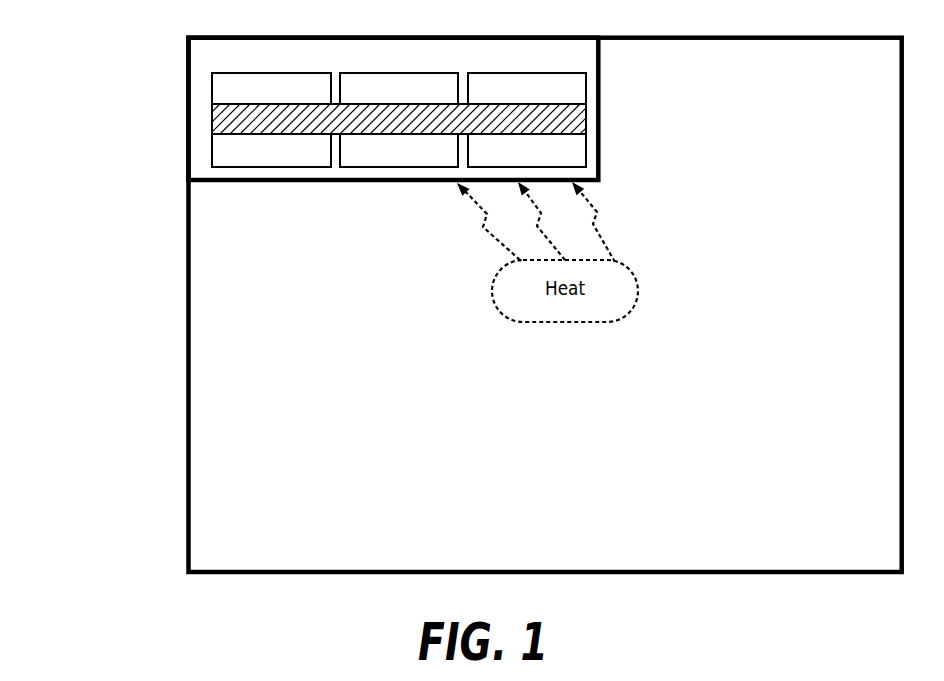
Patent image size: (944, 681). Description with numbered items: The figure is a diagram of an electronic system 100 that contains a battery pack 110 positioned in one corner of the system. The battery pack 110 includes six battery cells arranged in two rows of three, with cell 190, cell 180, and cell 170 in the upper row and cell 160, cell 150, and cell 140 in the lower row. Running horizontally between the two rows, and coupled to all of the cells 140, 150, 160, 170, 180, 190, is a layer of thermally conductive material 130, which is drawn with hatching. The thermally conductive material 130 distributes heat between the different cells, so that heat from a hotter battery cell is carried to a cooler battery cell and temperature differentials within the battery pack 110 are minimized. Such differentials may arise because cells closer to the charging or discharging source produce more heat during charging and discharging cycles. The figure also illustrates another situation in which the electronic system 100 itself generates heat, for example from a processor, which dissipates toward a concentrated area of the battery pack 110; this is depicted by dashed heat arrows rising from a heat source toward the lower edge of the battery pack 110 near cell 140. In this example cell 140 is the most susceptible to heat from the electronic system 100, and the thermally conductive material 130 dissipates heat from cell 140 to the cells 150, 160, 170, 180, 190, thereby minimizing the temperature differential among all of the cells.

The electronic system 100 is at (543, 520).
The battery pack 110 is at (468, 70).
The thermally conductive material 130 is at (312, 70).
The cell 140 is at (527, 150).
The cell 150 is at (399, 150).
The cell 160 is at (271, 150).
The cell 170 is at (527, 88).
The cell 180 is at (399, 88).
The cell 190 is at (271, 88).